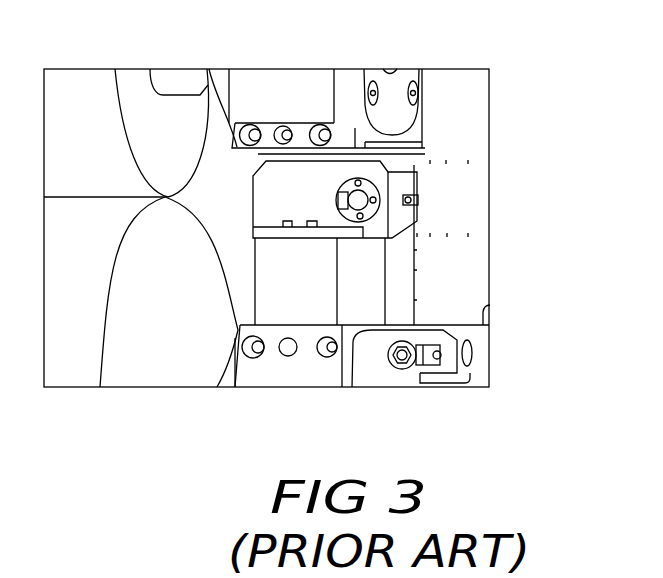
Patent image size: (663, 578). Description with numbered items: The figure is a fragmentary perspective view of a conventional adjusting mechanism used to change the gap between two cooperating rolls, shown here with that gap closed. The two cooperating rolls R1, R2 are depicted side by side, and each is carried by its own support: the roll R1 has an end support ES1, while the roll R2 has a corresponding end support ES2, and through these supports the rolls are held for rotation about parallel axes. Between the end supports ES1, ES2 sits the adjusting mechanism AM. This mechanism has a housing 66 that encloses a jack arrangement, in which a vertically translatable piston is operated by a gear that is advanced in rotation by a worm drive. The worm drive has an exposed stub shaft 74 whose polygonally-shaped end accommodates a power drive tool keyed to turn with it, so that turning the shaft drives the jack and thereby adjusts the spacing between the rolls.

The roll R1 is at (151, 133).
The roll R2 is at (152, 292).
The end support ES1 is at (280, 93).
The end support ES2 is at (317, 373).
The adjusting mechanism AM is at (307, 195).
The housing 66 is at (398, 188).
The stub shaft 74 is at (350, 207).